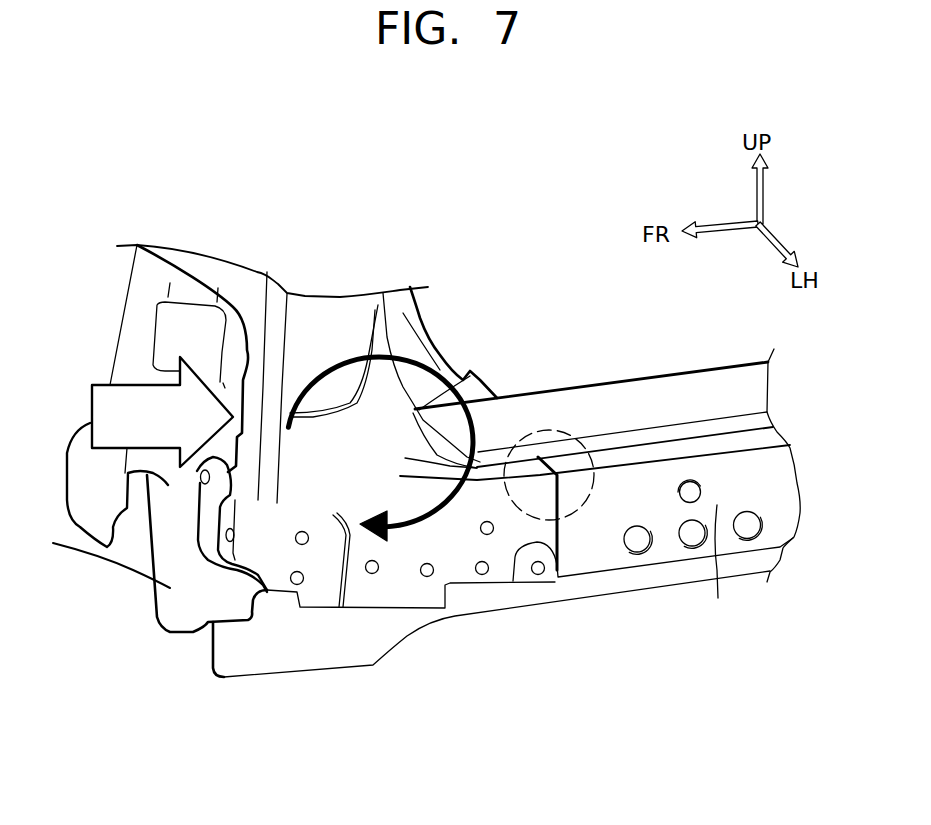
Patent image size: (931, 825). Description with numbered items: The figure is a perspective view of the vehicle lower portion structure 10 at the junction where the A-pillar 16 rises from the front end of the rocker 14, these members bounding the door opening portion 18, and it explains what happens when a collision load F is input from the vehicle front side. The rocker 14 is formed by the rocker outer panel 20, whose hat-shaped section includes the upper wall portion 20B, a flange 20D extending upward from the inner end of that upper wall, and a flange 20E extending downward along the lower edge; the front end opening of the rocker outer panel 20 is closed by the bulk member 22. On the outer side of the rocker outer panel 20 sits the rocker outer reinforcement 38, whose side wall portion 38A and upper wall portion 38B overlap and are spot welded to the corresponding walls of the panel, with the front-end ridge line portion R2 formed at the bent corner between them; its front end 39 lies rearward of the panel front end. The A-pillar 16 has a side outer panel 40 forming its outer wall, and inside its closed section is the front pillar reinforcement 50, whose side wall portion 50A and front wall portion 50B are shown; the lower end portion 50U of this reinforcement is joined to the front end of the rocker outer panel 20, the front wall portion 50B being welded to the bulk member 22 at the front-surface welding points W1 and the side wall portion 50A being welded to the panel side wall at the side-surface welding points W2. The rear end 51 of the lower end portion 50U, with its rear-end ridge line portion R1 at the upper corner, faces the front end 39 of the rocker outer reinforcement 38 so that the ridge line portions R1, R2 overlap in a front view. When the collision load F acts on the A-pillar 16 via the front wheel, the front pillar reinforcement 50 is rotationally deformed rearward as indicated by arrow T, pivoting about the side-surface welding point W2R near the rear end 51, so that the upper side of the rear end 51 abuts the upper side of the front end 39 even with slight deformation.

The vehicle lower portion structure 10 is at (561, 288).
The rocker 14 is at (639, 347).
The A-pillar 16 is at (450, 318).
The door opening portion 18 is at (598, 322).
The rocker outer panel 20 is at (668, 369).
The upper wall portion 20B is at (735, 423).
The flange 20D is at (702, 391).
The flange 20E is at (638, 577).
The bulk member 22 is at (213, 572).
The rocker outer reinforcement 38 is at (674, 573).
The side wall portion 38A is at (720, 598).
The upper wall portion 38B is at (656, 457).
The front end 39 is at (547, 470).
The side outer panel 40 is at (403, 313).
The front pillar reinforcement 50 is at (266, 337).
The side wall portion 50A is at (333, 317).
The front wall portion 50B is at (275, 302).
The lower end portion 50U is at (328, 614).
The rear end 51 is at (553, 437).
The collision load F is at (130, 383).
The arrow indicating rotational deformation T is at (433, 363).
The rear-end ridge line portion R1 is at (533, 463).
The front-end ridge line portion R2 is at (587, 443).
The front-surface welding points W1 is at (197, 472).
The side-surface welding points W2 is at (299, 572).
The side-surface welding point W2R is at (541, 575).